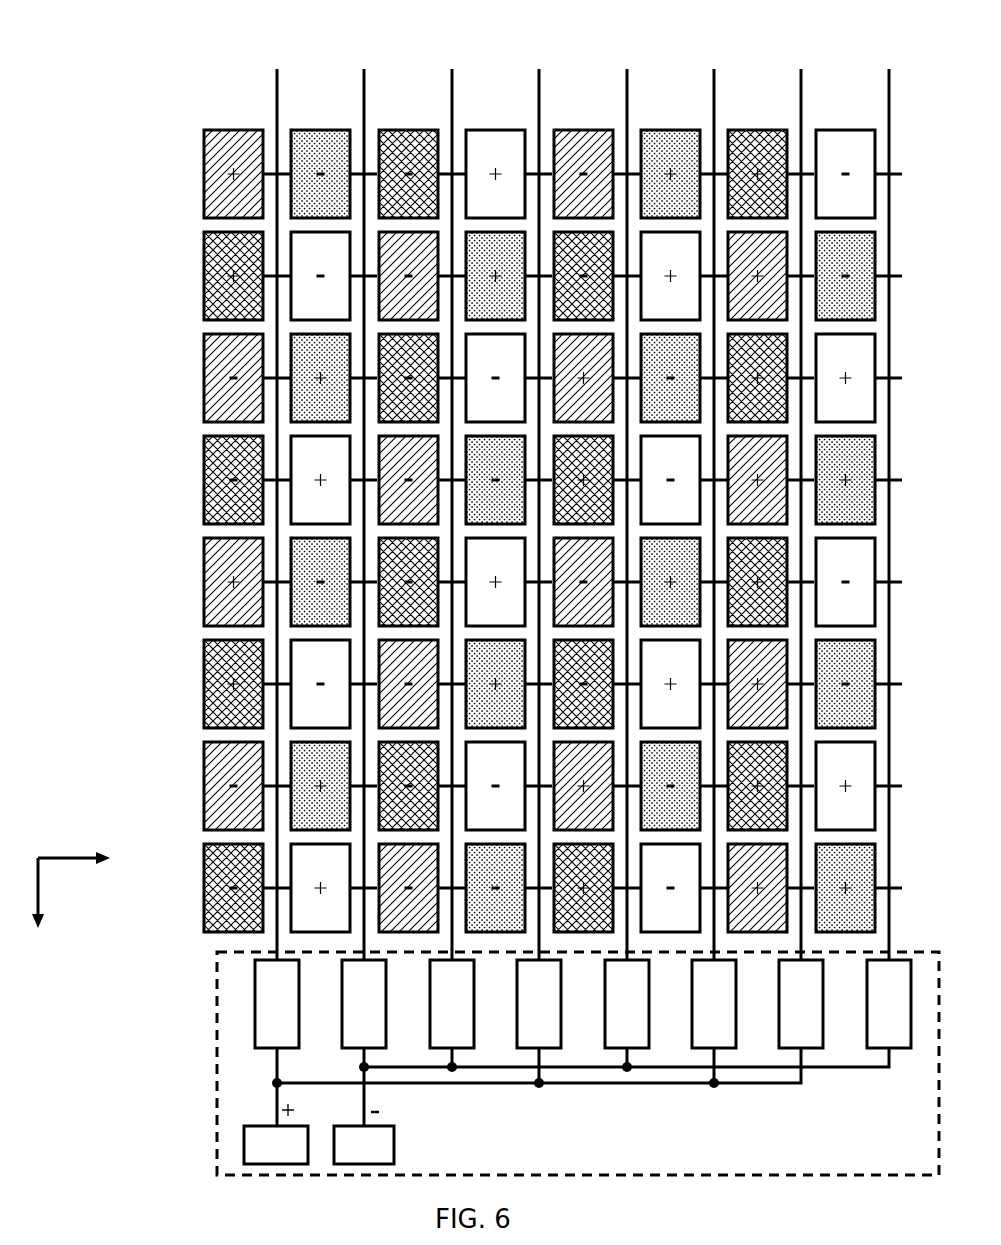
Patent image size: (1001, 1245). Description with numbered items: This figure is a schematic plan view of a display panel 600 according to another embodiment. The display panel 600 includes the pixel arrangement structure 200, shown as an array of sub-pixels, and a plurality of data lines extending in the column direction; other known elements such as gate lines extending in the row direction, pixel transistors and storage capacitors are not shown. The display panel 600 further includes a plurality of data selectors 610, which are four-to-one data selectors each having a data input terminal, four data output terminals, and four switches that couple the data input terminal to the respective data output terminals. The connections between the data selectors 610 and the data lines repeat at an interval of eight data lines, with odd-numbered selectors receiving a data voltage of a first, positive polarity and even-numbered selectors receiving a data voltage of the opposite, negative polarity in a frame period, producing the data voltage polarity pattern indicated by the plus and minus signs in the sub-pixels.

The display panel 600 is at (90, 63).
The pixel arrangement structure 200 is at (125, 506).
The data selectors 610 is at (217, 1068).